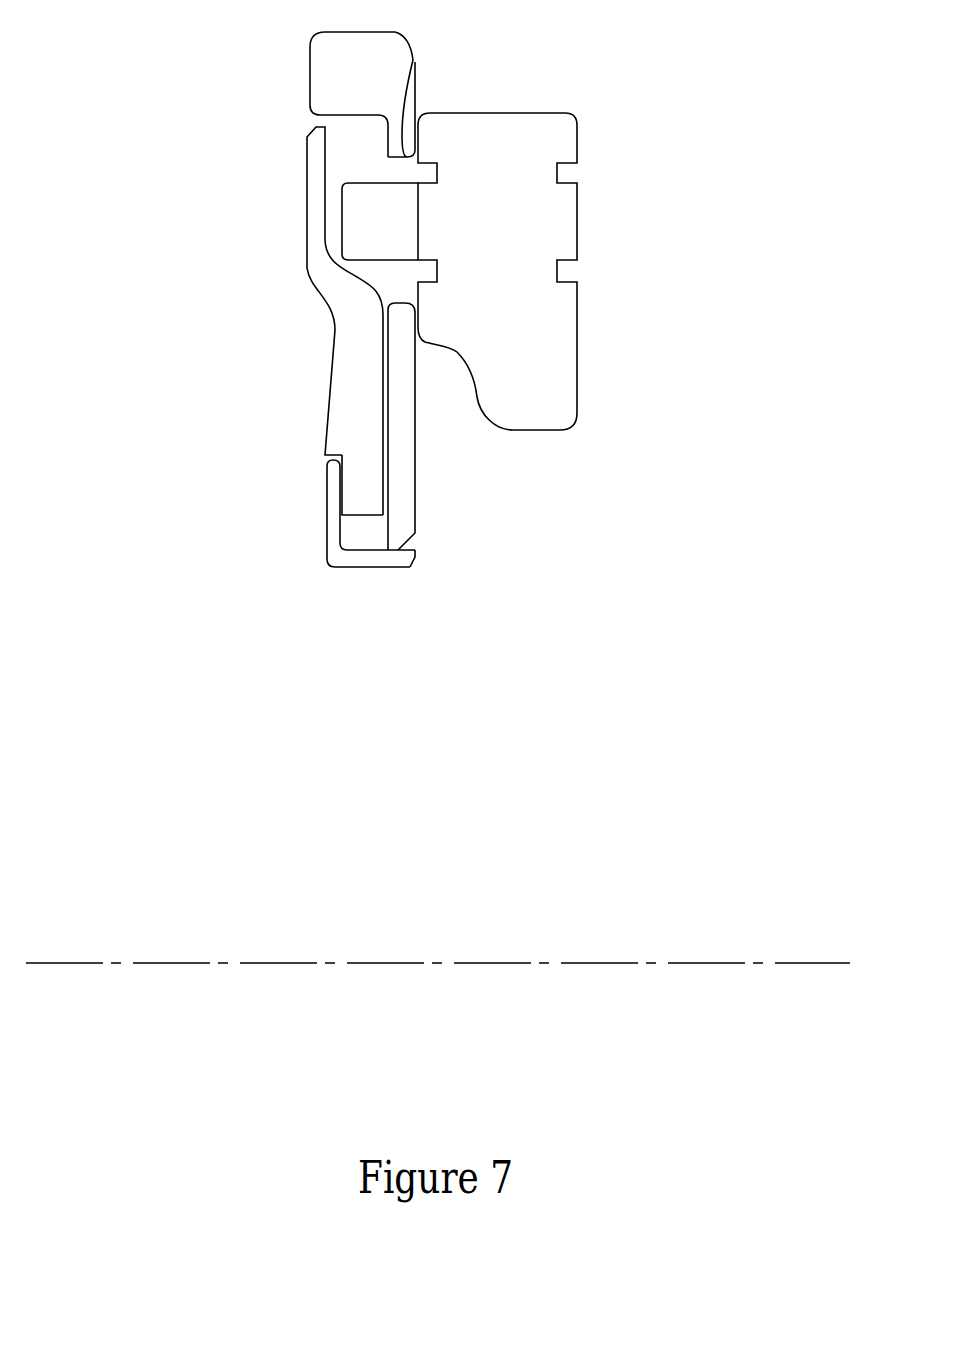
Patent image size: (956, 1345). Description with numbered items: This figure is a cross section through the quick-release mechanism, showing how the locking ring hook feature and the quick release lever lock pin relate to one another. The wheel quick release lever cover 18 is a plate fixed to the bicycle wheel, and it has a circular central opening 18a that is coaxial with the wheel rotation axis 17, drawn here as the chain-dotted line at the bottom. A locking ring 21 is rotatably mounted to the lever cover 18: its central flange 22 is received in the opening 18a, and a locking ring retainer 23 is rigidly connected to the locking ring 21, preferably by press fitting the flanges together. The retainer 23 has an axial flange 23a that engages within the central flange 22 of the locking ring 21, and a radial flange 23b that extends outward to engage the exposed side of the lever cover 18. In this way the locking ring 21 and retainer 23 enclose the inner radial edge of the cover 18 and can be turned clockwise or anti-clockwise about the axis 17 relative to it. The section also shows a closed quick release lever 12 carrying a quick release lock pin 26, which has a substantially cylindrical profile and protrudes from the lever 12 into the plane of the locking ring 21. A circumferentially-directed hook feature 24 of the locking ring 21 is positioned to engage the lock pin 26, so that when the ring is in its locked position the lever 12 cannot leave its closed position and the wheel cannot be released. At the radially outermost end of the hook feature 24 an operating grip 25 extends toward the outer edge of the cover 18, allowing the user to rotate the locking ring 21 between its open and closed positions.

The quick release lever 12 is at (577, 362).
The wheel rotation axis 17 is at (295, 963).
The wheel quick release lever cover 18 is at (305, 269).
The central opening 18a is at (363, 515).
The locking ring 21 is at (417, 458).
The central flange 22 is at (353, 547).
The locking ring retainer 23 is at (362, 570).
The axial flange 23a is at (383, 560).
The radial flange 23b is at (331, 507).
The hook feature 24 is at (415, 62).
The operating grip 25 is at (310, 58).
The quick release lock pin 26 is at (393, 220).